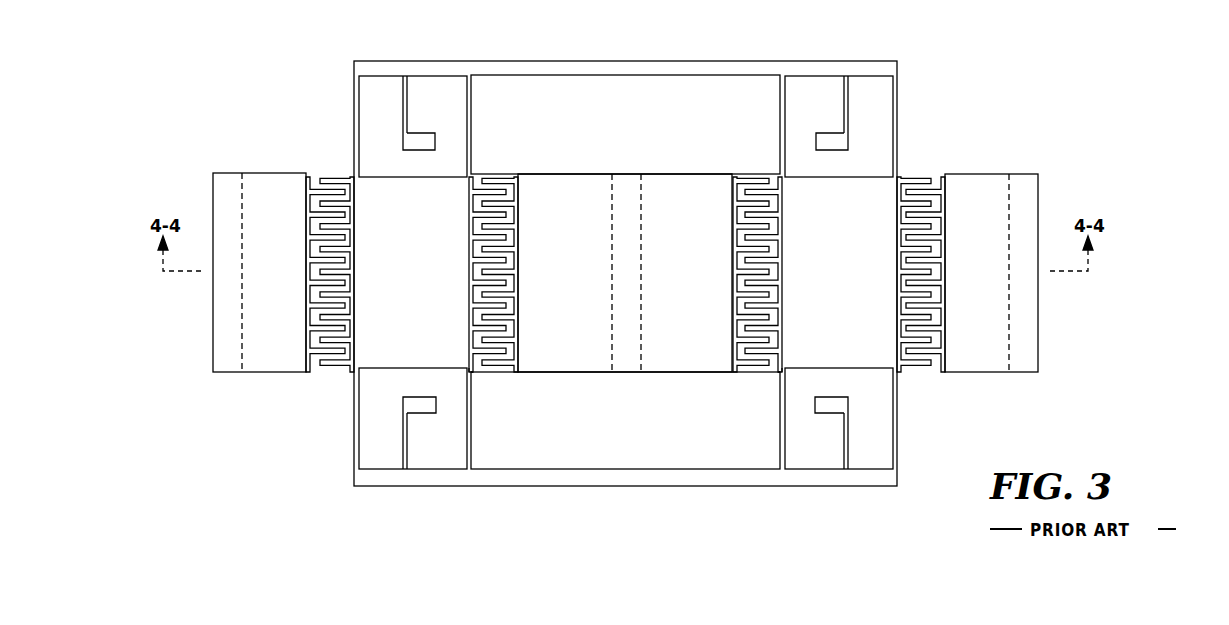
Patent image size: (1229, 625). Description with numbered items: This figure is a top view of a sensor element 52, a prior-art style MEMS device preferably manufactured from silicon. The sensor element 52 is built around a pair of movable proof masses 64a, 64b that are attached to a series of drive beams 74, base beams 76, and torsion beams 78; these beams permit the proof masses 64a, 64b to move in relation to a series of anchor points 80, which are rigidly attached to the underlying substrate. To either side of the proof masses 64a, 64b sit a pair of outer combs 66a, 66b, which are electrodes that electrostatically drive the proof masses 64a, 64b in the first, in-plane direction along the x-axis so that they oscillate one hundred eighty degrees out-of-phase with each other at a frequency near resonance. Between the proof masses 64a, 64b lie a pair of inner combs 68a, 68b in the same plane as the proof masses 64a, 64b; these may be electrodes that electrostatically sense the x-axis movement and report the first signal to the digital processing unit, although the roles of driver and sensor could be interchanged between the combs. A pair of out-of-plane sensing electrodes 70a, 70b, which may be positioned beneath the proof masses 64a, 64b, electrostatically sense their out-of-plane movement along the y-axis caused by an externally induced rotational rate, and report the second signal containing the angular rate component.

The sensor element 52 is at (1017, 63).
The movable proof mass 64a is at (433, 269).
The movable proof mass 64b is at (858, 269).
The outer comb 66a is at (265, 173).
The outer comb 66b is at (975, 174).
The inner comb 68a is at (567, 174).
The inner comb 68b is at (692, 174).
The out-of-plane sensing electrode 70a is at (474, 374).
The out-of-plane sensing electrode 70b is at (777, 374).
The drive beam 74 is at (355, 100).
The base beam 76 is at (687, 61).
The torsion beam 78 is at (407, 103).
The anchor point 80 is at (405, 141).